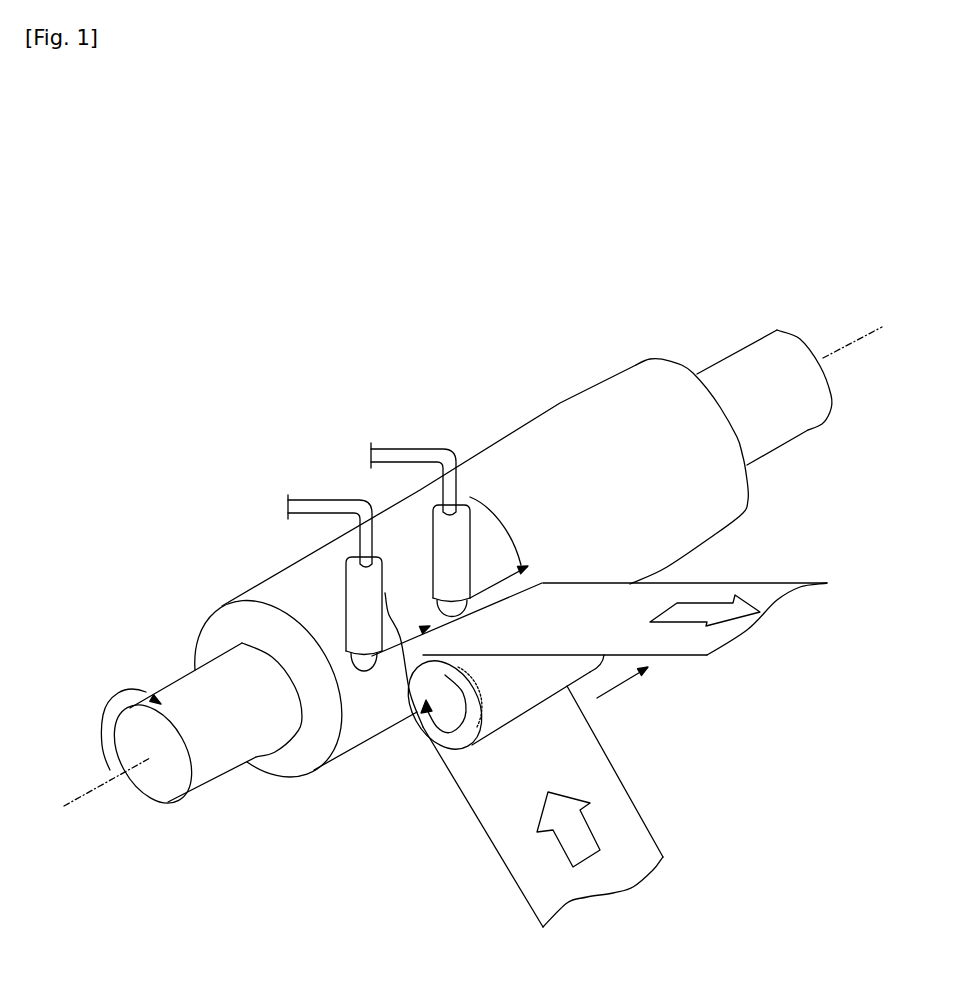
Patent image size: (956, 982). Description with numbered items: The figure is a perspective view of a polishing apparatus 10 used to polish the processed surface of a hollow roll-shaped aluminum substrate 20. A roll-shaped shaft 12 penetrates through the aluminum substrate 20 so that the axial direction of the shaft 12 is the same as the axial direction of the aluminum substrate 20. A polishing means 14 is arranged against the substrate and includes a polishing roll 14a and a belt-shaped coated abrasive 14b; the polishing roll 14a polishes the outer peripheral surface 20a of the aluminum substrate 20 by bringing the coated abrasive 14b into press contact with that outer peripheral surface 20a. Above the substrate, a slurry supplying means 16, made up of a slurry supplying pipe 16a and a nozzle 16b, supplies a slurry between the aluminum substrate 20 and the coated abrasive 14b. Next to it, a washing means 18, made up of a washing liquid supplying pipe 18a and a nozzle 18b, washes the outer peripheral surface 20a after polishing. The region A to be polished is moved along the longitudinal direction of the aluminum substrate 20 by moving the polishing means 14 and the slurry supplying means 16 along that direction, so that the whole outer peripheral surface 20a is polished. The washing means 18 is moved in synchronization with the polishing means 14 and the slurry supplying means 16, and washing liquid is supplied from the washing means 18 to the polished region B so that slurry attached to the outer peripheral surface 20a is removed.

The polishing apparatus 10 is at (195, 278).
The shaft 12 is at (813, 342).
The polishing means 14 is at (595, 766).
The polishing roll 14a is at (430, 740).
The coated abrasive 14b is at (480, 820).
The slurry supplying means 16 is at (440, 467).
The slurry supplying pipe 16a is at (427, 449).
The nozzle 16b is at (489, 560).
The washing means 18 is at (296, 522).
The washing liquid supplying pipe 18a is at (307, 500).
The nozzle 18b is at (288, 578).
The aluminum substrate 20 is at (526, 515).
The outer peripheral surface 20a is at (723, 503).
The region to be polished A is at (389, 585).
The polished region B is at (232, 572).